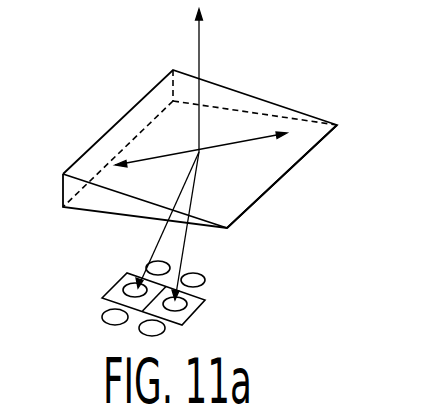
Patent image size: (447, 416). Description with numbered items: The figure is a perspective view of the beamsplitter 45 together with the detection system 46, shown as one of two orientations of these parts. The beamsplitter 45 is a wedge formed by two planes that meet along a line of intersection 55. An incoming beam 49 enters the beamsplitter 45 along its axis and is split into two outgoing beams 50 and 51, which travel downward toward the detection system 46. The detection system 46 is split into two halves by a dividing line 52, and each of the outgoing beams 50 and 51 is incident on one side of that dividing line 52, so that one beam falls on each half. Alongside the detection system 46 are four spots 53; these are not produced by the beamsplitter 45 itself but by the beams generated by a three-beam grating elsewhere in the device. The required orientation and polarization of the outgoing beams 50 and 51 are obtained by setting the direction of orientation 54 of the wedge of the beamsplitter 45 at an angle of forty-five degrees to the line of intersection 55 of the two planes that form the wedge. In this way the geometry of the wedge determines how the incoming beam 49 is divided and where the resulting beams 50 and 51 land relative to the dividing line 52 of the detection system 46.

The beamsplitter 45 is at (302, 110).
The detection system 46 is at (205, 300).
The incoming beam 49 is at (200, 62).
The outgoing beam 50 is at (159, 240).
The outgoing beam 51 is at (184, 243).
The dividing line 52 is at (103, 301).
The spots 53 is at (139, 330).
The direction of orientation 54 is at (155, 155).
The line of intersection 55 is at (267, 197).